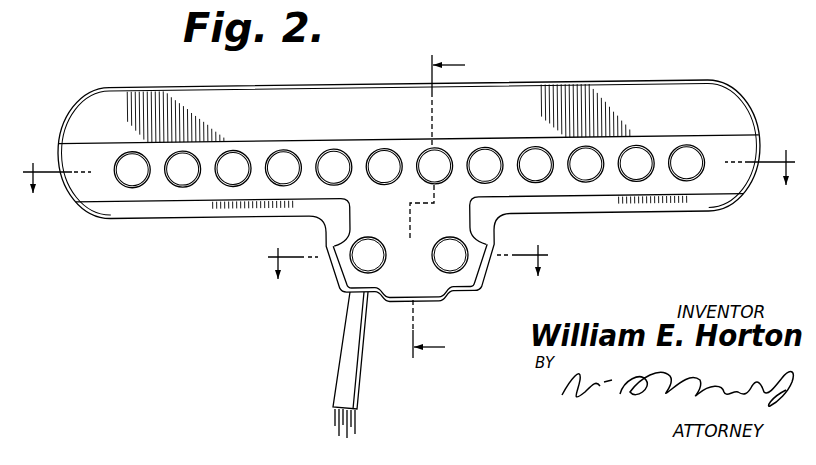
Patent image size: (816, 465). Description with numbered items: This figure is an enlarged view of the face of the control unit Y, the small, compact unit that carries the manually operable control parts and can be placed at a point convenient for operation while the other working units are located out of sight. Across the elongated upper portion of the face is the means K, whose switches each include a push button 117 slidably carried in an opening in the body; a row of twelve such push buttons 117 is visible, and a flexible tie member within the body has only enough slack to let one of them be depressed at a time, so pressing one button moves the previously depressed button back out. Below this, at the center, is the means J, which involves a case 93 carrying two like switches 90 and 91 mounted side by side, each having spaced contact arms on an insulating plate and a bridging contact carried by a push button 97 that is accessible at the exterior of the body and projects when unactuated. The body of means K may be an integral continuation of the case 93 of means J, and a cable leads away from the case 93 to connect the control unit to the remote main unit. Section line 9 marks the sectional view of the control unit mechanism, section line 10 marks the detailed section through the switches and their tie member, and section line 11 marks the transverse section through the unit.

The control unit Y is at (617, 78).
The means K is at (131, 188).
The push button 117 is at (321, 153).
The means J is at (482, 267).
The switch 90 is at (350, 266).
The switch 91 is at (467, 277).
The push button 97 is at (443, 262).
The case 93 is at (408, 290).
The section line 9- 9 is at (408, 159).
The section line 10- 10 is at (411, 249).
The section line 11- 11 is at (454, 206).